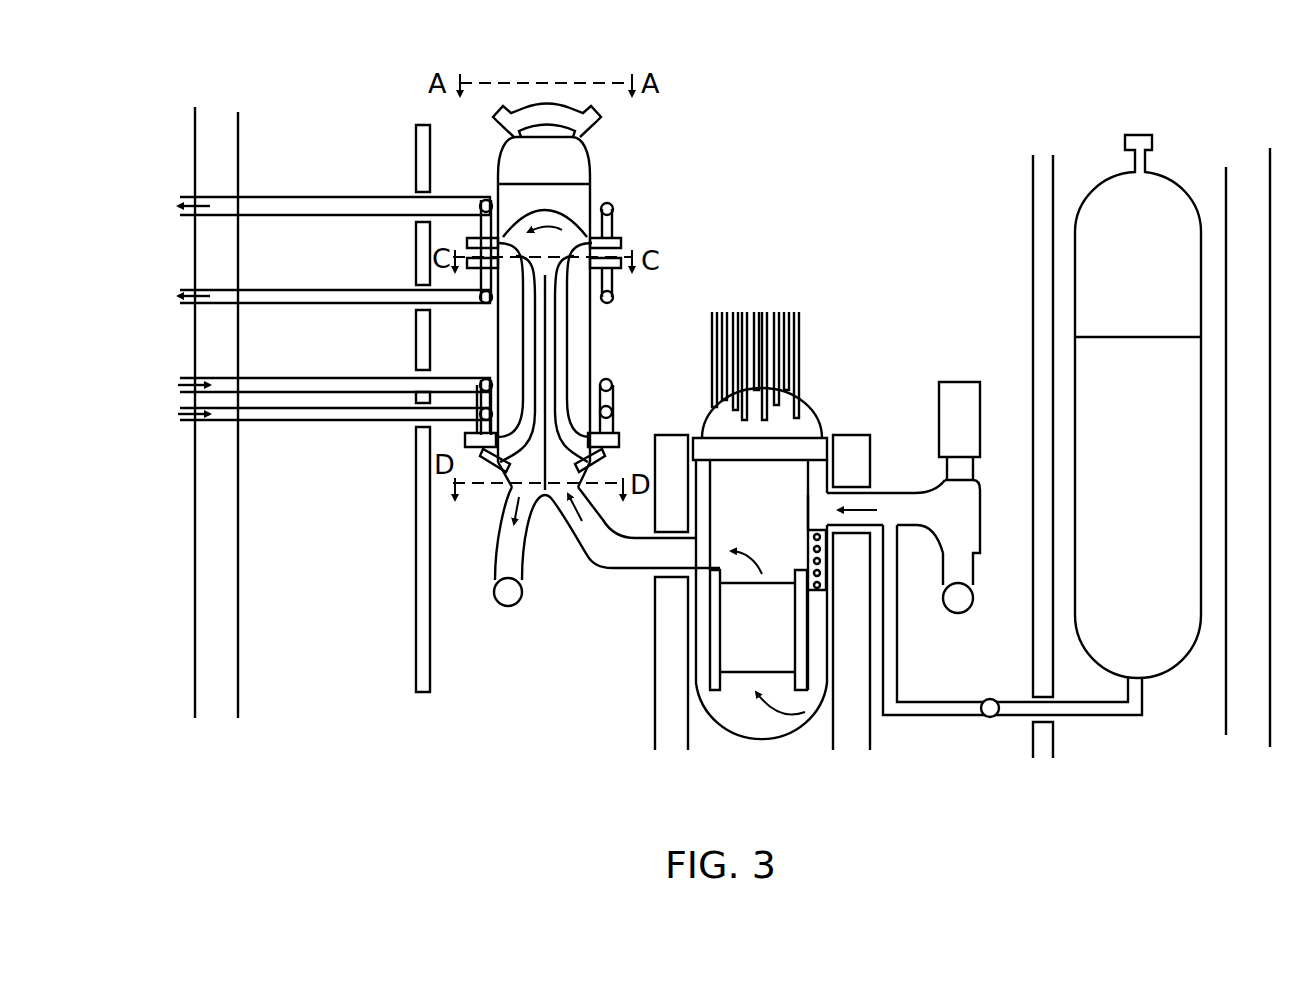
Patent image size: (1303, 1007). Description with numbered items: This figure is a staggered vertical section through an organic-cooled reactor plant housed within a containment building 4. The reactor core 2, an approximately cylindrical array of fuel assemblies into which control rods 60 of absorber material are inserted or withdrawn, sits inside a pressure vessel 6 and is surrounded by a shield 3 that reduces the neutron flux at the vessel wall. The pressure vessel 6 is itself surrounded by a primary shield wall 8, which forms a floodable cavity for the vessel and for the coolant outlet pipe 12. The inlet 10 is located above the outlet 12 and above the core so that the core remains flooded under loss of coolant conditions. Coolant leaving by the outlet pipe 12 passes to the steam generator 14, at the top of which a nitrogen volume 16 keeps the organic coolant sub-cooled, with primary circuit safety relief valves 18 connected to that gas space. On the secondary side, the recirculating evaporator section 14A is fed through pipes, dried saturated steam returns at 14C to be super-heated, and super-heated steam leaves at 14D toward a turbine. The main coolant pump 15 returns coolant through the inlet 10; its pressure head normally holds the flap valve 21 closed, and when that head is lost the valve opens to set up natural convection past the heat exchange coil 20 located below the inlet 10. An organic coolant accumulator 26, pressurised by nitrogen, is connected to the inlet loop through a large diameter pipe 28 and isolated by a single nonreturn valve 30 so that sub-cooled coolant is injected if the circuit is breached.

The reactor core 2 is at (757, 627).
The shield 3 is at (798, 690).
The containment building 4 is at (220, 550).
The pressure vessel 6 is at (870, 650).
The primary shield wall 8 is at (668, 694).
The inlet 10 is at (883, 502).
The coolant outlet pipe 12 is at (633, 553).
The steam generator 14 is at (578, 355).
The recirculating evaporator section 14A is at (313, 290).
The saturated steam return 14C is at (613, 233).
The superheated steam outlet 14D is at (608, 415).
The main coolant pump 15 is at (958, 503).
The nitrogen volume 16 is at (566, 166).
The primary circuit safety relief valve 18 is at (547, 111).
The heat exchange coil 20 is at (823, 559).
The flap valve 21 is at (800, 538).
The organic coolant accumulator 26 is at (1110, 278).
The large diameter pipe 28 is at (937, 708).
The nonreturn valve 30 is at (991, 698).
The control rod 60 is at (753, 310).